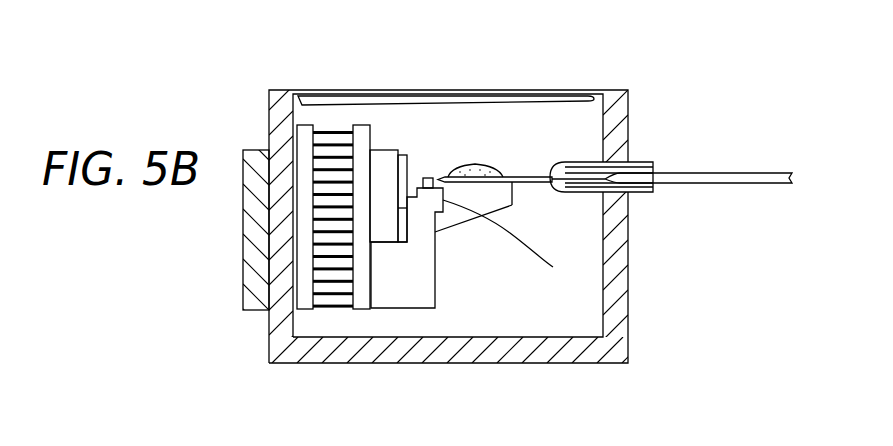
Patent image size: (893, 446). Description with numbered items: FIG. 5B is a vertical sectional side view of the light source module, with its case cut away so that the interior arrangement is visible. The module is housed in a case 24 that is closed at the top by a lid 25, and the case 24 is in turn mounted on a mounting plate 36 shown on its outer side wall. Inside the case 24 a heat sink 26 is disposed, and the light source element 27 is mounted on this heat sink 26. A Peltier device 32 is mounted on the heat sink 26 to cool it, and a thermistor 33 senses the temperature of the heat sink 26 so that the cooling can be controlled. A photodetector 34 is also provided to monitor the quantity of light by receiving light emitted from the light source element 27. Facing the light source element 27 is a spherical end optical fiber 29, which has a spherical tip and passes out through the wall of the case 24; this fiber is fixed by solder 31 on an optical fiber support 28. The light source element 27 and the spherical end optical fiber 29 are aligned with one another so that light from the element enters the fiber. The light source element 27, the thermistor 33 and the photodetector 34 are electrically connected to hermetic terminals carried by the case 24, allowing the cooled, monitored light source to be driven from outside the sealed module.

The case 24 is at (307, 355).
The lid 25 is at (310, 90).
The heat sink 26 is at (402, 298).
The light source element 27 is at (427, 178).
The optical fiber support 28 is at (492, 198).
The spherical end optical fiber 29 is at (742, 172).
The solder 31 is at (477, 164).
The Peltier device 32 is at (357, 125).
The thermistor 33 is at (553, 267).
The photodetector 34 is at (403, 155).
The mounting plate 36 is at (255, 311).